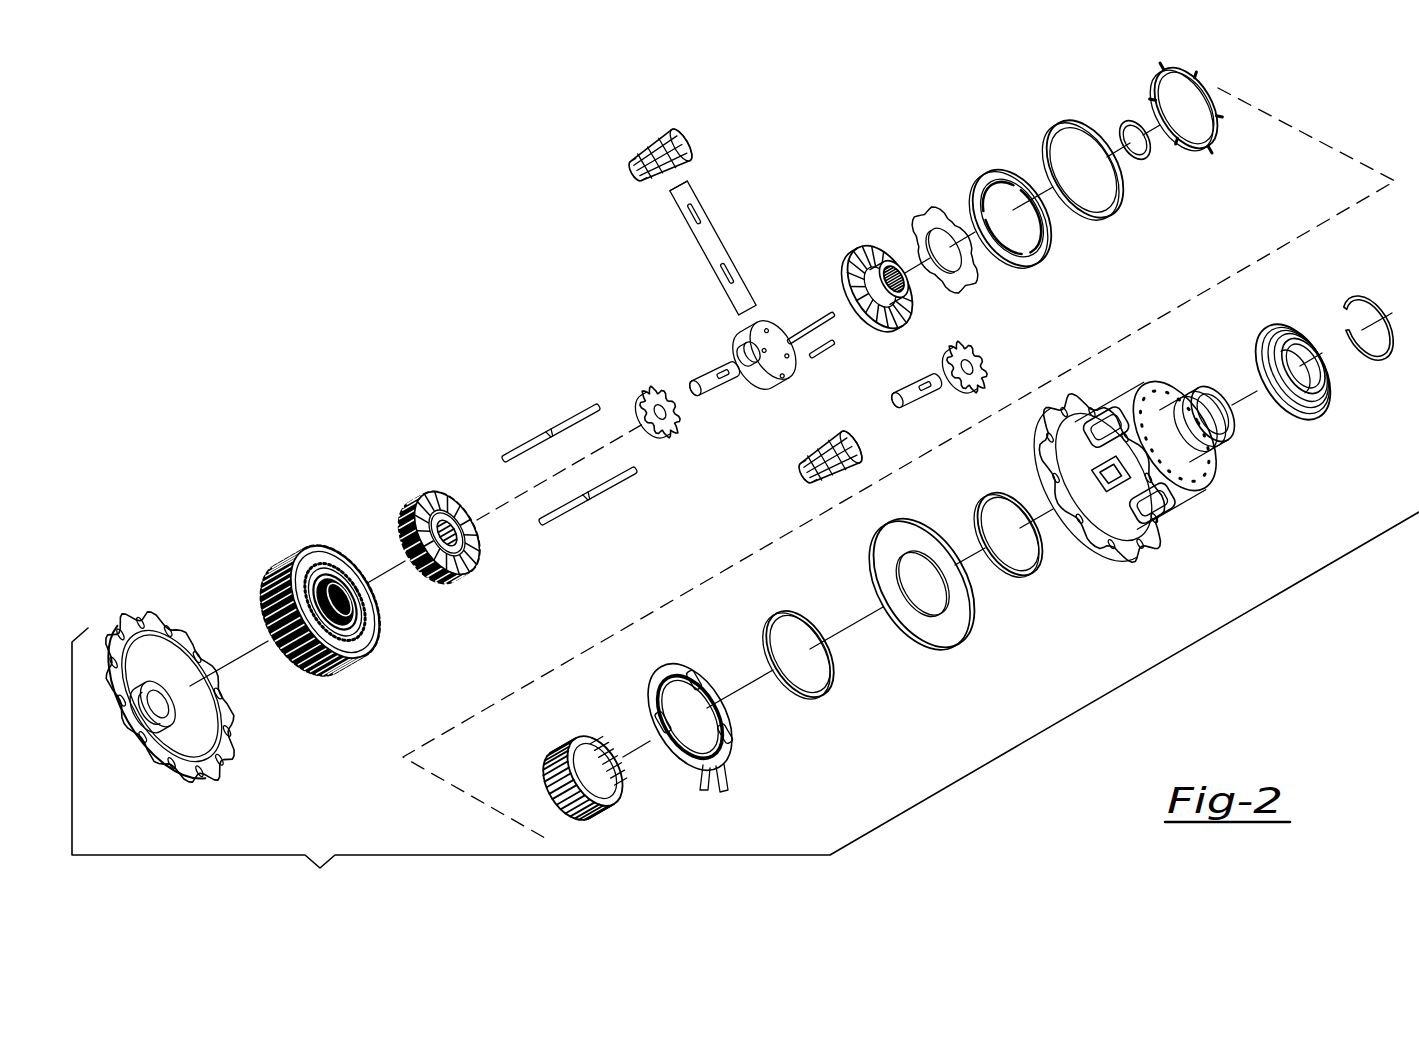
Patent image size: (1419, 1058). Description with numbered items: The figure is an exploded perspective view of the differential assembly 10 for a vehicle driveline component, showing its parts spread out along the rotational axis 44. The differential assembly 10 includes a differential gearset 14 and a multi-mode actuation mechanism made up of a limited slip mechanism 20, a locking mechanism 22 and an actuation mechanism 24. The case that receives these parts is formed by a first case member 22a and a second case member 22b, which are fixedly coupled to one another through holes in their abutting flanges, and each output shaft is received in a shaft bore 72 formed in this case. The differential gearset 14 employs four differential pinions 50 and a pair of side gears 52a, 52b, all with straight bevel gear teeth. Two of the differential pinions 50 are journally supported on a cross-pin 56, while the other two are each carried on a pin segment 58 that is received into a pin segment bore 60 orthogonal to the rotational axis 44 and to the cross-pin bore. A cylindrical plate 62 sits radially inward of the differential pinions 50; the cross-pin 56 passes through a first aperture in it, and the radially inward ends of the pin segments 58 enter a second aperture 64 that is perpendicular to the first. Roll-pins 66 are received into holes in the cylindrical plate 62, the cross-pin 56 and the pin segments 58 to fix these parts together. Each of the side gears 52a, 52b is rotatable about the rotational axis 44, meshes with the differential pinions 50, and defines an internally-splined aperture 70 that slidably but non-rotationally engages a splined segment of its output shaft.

The differential assembly 10 is at (745, 707).
The differential gearset 14 is at (774, 128).
The limited slip mechanism 20 is at (315, 493).
The locking mechanism 22 is at (953, 145).
The first case member 22a is at (1187, 497).
The second case member 22b is at (160, 617).
The actuation mechanism 24 is at (845, 715).
The rotational axis 44 is at (1305, 236).
The differential pinions 50 is at (638, 165).
The side gear 52a is at (437, 492).
The side gear 52b is at (850, 266).
The cross-pin 56 is at (695, 236).
The pin segments 58 is at (722, 386).
The pin segment bore 60 is at (1098, 500).
The cylindrical plate 62 is at (772, 372).
The second aperture 64 is at (757, 352).
The roll-pins 66 is at (822, 355).
The internally-splined aperture 70 is at (477, 540).
The shaft bore 72 is at (1232, 418).